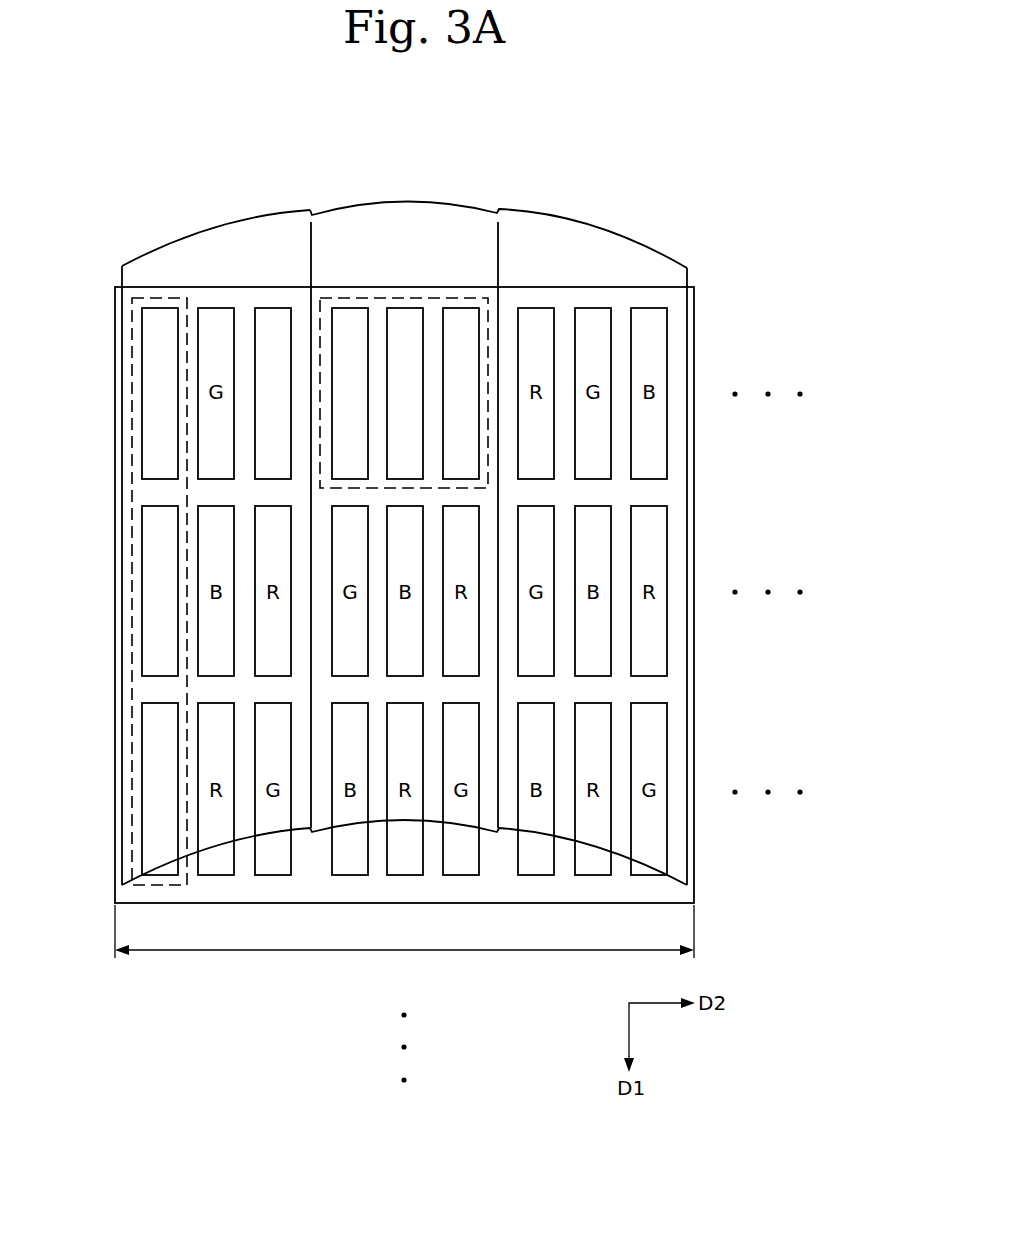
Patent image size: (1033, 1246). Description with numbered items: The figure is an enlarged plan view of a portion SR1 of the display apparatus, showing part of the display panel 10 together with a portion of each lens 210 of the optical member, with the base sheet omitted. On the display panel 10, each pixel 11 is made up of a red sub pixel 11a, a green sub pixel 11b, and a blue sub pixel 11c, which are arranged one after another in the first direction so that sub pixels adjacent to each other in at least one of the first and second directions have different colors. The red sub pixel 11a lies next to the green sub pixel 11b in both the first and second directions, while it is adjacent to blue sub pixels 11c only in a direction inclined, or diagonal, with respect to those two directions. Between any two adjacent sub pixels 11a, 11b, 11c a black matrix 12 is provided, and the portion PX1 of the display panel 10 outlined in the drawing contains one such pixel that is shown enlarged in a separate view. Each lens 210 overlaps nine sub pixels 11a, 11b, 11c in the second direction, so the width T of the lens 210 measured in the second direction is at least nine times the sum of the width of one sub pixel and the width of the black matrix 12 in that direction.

The display panel 10 is at (658, 285).
The lens 210 is at (404, 520).
The portion of the display apparatus SR1 is at (214, 218).
The pixel 11 is at (114, 591).
The red sub pixel 11a is at (148, 432).
The green sub pixel 11b is at (148, 627).
The blue sub pixel 11c is at (148, 822).
The black matrix 12 is at (245, 315).
The portion of the display panel PX1 is at (405, 298).
The width of the lens T is at (404, 942).